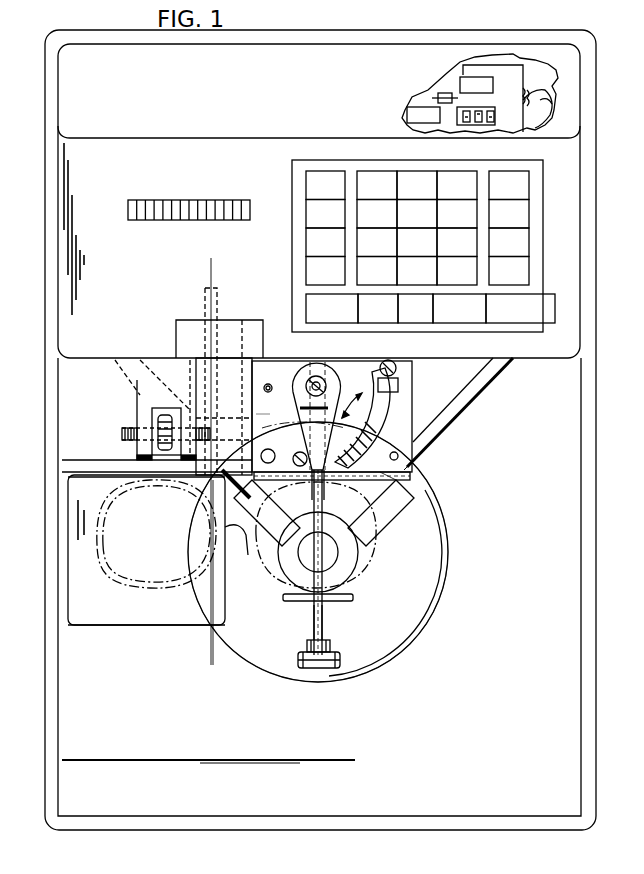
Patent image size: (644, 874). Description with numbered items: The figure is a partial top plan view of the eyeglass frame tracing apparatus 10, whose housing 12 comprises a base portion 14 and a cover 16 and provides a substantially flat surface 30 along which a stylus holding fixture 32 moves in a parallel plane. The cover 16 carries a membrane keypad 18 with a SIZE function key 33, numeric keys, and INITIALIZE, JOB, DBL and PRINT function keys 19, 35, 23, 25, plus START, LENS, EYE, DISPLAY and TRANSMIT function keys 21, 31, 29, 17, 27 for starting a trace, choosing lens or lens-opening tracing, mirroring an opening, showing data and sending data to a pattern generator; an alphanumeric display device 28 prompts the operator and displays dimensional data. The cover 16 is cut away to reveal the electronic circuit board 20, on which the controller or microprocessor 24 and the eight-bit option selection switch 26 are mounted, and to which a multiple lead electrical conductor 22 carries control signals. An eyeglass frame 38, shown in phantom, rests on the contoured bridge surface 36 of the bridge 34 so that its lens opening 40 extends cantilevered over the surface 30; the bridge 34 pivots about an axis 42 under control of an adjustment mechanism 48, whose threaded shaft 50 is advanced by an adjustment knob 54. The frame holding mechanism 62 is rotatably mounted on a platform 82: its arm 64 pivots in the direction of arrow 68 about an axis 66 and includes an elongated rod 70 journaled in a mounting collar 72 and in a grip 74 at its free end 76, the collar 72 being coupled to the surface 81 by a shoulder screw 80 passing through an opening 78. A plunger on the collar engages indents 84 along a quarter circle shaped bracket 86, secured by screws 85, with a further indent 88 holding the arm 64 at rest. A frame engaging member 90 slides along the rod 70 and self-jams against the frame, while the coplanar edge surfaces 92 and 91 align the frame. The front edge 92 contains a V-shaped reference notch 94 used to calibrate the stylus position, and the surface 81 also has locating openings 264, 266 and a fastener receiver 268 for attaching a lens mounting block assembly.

The frame tracing apparatus 10 is at (468, 29).
The housing 12 is at (42, 56).
The base portion 14 is at (590, 480).
The cover 16 is at (570, 149).
The DISPLAY function key 17 is at (452, 323).
The keypad 18 is at (297, 160).
The INITIALIZE function key 19 is at (529, 182).
The electronic circuit board 20 is at (510, 70).
The START function key 21 is at (332, 323).
The multiple lead electrical conductor 22 is at (540, 100).
The DBL function key 23 is at (530, 242).
The controller or microprocessor 24 is at (493, 85).
The PRINT function key 25 is at (530, 263).
The option selection switch 26 is at (501, 105).
The TRANSMIT function key 27 is at (520, 323).
The alphanumeric display device 28 is at (192, 200).
The EYE function key 29 is at (417, 323).
The flat surface 30 is at (523, 540).
The LENS function key 31 is at (378, 323).
The stylus holding fixture 32 is at (433, 492).
The SIZE function key 33 is at (306, 262).
The eyeglass frame support structure or bridge 34 is at (123, 630).
The JOB function key 35 is at (529, 210).
The bridge surface 36 is at (97, 600).
The eyeglass frame 38 is at (372, 520).
The lens opening 40 is at (268, 547).
The pivot axis 42 is at (214, 645).
The adjustment mechanism 48 is at (133, 423).
The threaded shaft 50 is at (128, 442).
The adjustment knob 54 is at (164, 413).
The eyeglass frame holding mechanism 62 is at (333, 617).
The arm 64 is at (295, 377).
The pivot axis 66 is at (313, 371).
The arrow 68 is at (359, 397).
The elongated rod 70 is at (316, 616).
The mounting collar 72 is at (300, 412).
The grip 74 is at (338, 660).
The free end 76 is at (323, 633).
The opening 78 is at (327, 380).
The shoulder screw 80 is at (277, 382).
The platform surface 81 is at (270, 427).
The platform 82 is at (412, 400).
The indents 84 is at (391, 458).
The screws 85 is at (396, 369).
The quarter circle shaped bracket 86 is at (380, 426).
The indent 88 is at (398, 386).
The frame engaging member 90 is at (340, 597).
The front edge surface 91 is at (82, 478).
The front edge 92 is at (392, 484).
The V-shaped vertical reference notch 94 is at (312, 484).
The locating opening 264 is at (420, 455).
The locating opening 266 is at (269, 400).
The fastener receiver 268 is at (266, 448).